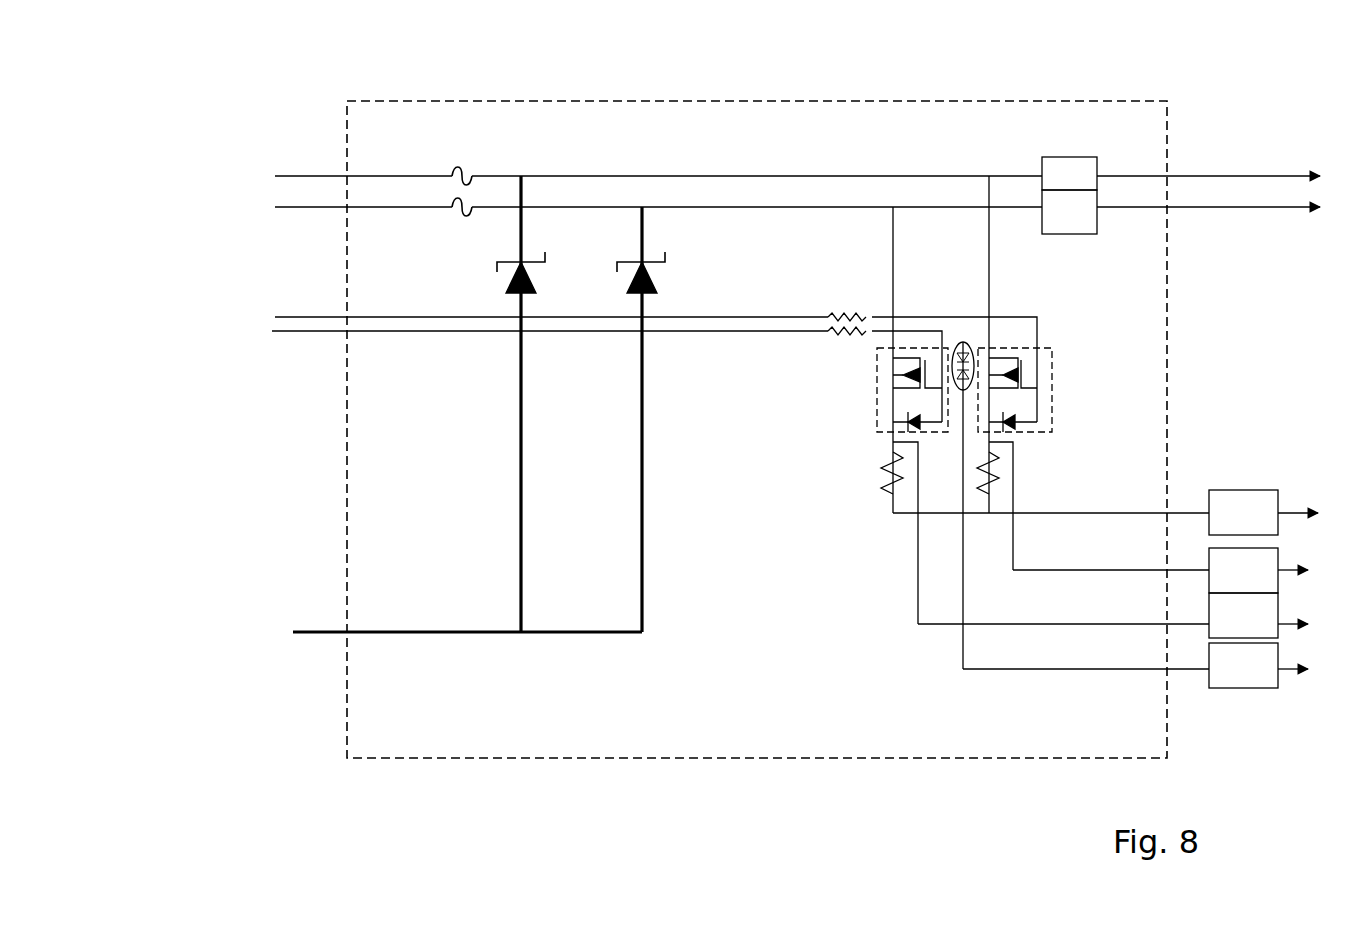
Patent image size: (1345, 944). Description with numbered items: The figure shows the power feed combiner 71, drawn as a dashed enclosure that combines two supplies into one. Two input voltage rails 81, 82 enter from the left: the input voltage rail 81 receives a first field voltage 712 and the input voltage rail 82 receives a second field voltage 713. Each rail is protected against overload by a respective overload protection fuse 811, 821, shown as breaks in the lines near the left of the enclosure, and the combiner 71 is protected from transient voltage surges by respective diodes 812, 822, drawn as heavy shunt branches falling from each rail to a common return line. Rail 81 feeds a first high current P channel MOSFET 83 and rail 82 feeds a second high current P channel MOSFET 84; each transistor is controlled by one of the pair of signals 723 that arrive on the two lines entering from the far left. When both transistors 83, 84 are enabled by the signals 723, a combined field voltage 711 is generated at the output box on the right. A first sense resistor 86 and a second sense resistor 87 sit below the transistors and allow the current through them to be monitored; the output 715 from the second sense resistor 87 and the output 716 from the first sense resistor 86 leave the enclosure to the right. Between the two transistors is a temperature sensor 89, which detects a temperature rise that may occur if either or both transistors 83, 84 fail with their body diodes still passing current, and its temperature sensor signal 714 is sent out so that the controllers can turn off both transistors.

The power feed combiner 71 is at (450, 99).
The first field voltage 712 is at (634, 176).
The second field voltage 713 is at (634, 208).
The pair of signals 723 is at (270, 331).
The overload protection fuse 811 is at (482, 158).
The overload protection fuse 821 is at (444, 217).
The diode 812 is at (484, 270).
The diode 822 is at (673, 272).
The input voltage rail 81 is at (1181, 173).
The input voltage rail 82 is at (1181, 212).
The first high current P channel MOSFET 83 is at (1056, 375).
The second high current P channel MOSFET 84 is at (874, 378).
The first sense resistor 86 is at (866, 475).
The second sense resistor 87 is at (1007, 473).
The temperature sensor 89 is at (975, 338).
The combined field voltage 711 is at (1105, 512).
The temperature sensor signal 714 is at (1135, 665).
The output 715 is at (1160, 570).
The output 716 is at (1113, 615).